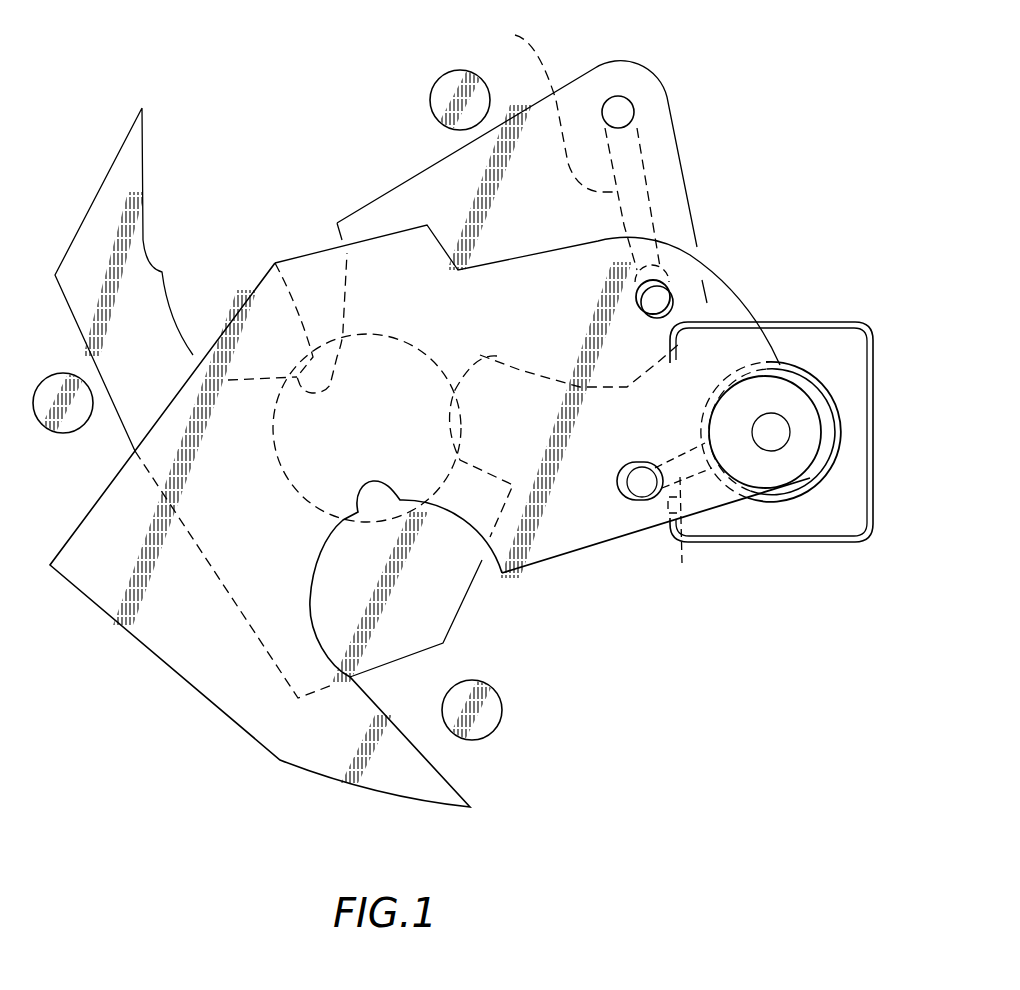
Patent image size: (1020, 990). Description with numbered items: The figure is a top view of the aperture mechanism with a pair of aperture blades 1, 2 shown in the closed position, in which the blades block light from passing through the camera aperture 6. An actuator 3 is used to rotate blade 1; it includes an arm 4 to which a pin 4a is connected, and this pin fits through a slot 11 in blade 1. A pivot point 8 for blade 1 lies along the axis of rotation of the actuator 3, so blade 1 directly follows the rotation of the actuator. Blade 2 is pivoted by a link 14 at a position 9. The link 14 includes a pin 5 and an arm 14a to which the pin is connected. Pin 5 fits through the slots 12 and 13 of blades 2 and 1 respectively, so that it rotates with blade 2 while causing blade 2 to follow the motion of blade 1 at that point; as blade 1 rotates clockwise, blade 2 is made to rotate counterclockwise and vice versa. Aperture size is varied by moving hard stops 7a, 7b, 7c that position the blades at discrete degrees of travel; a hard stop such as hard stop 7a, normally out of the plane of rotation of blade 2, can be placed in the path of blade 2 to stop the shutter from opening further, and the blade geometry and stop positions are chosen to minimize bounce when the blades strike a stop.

The aperture blade 1 is at (180, 637).
The aperture blade 2 is at (130, 187).
The actuator 3 is at (768, 546).
The arm 4 is at (682, 565).
The pin 4a is at (638, 498).
The pin 5 is at (668, 288).
The camera aperture 6 is at (275, 263).
The hard stop 7a is at (495, 730).
The hard stop 7b is at (84, 412).
The hard stop 7c is at (445, 75).
The pivot point 8 is at (772, 432).
The position 9 is at (618, 112).
The slot 11 is at (618, 497).
The slot 12 is at (677, 303).
The slot 13 is at (653, 267).
The link 14 is at (648, 173).
The arm 14a is at (543, 105).